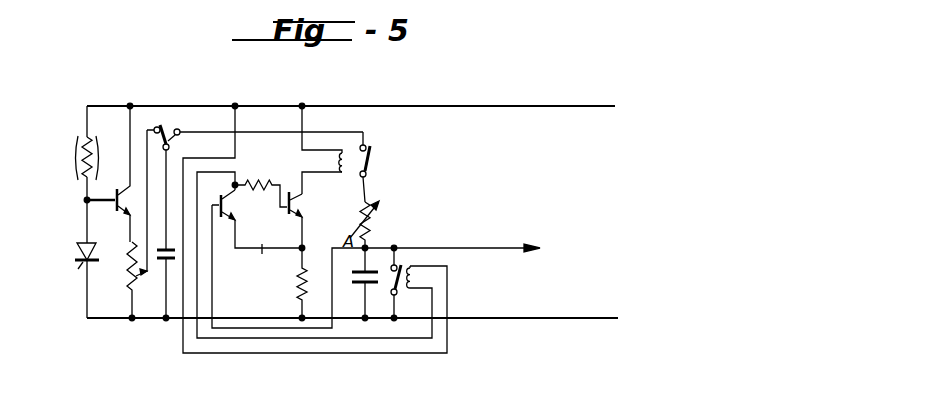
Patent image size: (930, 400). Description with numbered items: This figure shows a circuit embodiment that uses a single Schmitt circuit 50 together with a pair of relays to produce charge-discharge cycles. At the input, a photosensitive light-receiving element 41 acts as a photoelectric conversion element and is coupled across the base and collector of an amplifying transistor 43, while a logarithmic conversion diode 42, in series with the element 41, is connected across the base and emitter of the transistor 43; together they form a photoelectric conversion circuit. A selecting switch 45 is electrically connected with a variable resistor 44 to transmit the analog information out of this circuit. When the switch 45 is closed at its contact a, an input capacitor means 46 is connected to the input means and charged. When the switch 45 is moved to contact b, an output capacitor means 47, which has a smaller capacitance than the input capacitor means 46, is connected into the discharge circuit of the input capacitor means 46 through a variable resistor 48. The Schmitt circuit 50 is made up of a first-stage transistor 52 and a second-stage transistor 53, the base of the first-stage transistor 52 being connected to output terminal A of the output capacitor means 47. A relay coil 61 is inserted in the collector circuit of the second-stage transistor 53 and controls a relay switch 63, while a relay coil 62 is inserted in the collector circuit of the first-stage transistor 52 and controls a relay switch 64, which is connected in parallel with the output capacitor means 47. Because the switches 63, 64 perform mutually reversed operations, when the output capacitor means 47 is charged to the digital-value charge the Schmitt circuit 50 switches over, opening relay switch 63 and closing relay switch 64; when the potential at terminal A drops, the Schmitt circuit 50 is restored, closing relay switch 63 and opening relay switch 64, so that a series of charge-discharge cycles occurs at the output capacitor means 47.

The photosensitive light-receiving element 41 is at (79, 166).
The logarithmic conversion diode 42 is at (77, 273).
The amplifying transistor 43 is at (121, 193).
The variable resistor 44 is at (127, 281).
The selecting switch 45 is at (255, 190).
The input capacitor means 46 is at (156, 270).
The output capacitor means 47 is at (358, 283).
The variable resistor 48 is at (371, 223).
The Schmitt circuit 50 is at (258, 264).
The first-stage transistor 52 is at (232, 218).
The second-stage transistor 53 is at (296, 207).
The relay coil 61 is at (342, 174).
The relay coil 62 is at (416, 289).
The relay switch 63 is at (369, 163).
The relay switch 64 is at (393, 284).